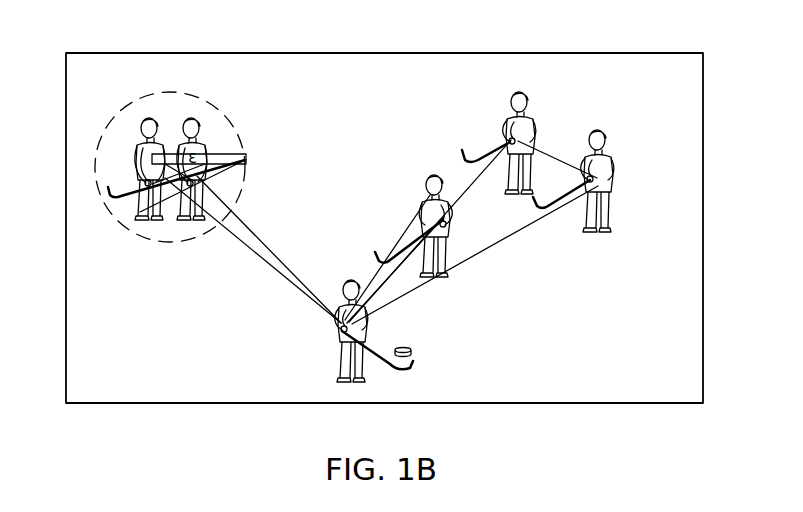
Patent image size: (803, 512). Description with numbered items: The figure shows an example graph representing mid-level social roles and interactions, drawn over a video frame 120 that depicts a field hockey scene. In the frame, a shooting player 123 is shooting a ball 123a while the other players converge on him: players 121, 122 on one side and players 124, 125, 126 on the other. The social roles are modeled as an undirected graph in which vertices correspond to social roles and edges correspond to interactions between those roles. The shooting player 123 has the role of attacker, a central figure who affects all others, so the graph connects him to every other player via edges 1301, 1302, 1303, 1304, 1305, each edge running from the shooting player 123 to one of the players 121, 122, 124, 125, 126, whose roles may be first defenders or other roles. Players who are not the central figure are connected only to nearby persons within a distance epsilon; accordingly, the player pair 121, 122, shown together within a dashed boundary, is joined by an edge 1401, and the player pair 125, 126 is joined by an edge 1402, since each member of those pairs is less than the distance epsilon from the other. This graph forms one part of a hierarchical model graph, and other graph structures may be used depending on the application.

The video frame 120 is at (705, 292).
The player 121 is at (152, 122).
The player 122 is at (192, 120).
The shooting player 123 is at (330, 362).
The ball 123a is at (412, 350).
The player 124 is at (427, 178).
The player 125 is at (527, 92).
The player 126 is at (612, 172).
The edge 1301 is at (243, 250).
The edge 1302 is at (248, 222).
The edge 1303 is at (400, 238).
The edge 1304 is at (472, 190).
The edge 1305 is at (483, 250).
The edge 1401 is at (140, 212).
The edge 1402 is at (552, 152).